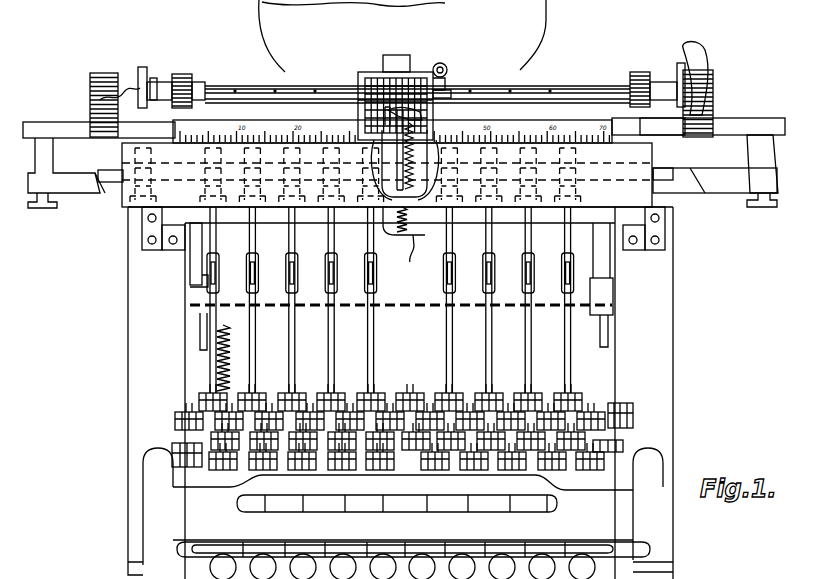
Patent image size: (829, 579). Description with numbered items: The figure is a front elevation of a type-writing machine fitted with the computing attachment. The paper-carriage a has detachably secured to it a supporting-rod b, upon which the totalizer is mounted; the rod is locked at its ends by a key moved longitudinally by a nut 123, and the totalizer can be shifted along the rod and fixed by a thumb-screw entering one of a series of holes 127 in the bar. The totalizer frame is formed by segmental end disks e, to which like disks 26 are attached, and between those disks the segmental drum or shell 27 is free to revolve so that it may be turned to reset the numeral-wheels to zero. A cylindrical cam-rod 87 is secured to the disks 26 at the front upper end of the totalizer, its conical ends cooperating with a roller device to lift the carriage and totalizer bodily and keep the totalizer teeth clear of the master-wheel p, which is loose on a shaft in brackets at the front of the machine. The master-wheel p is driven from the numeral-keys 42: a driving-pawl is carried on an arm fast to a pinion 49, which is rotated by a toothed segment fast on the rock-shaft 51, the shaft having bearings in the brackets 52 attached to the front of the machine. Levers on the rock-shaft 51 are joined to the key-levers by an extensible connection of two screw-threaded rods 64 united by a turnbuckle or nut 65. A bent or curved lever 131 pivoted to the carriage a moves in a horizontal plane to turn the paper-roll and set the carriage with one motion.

The nut 123 is at (180, 75).
The supporting-rod b is at (225, 90).
The holes 127 is at (310, 88).
The segmental drum or shell 27 is at (365, 71).
The cam-rod 87 is at (380, 78).
The disks 26 is at (432, 117).
The segmental end disks e is at (370, 113).
The master-wheel p is at (383, 140).
The pinion 49 is at (410, 147).
The paper-carriage a is at (742, 120).
The bent or curved lever 131 is at (657, 115).
The rock-shaft 51 is at (107, 190).
The brackets 52 is at (147, 230).
The screw-threaded rods 64 is at (492, 242).
The turnbuckle or nut 65 is at (495, 270).
The numeral-keys 42 is at (524, 394).